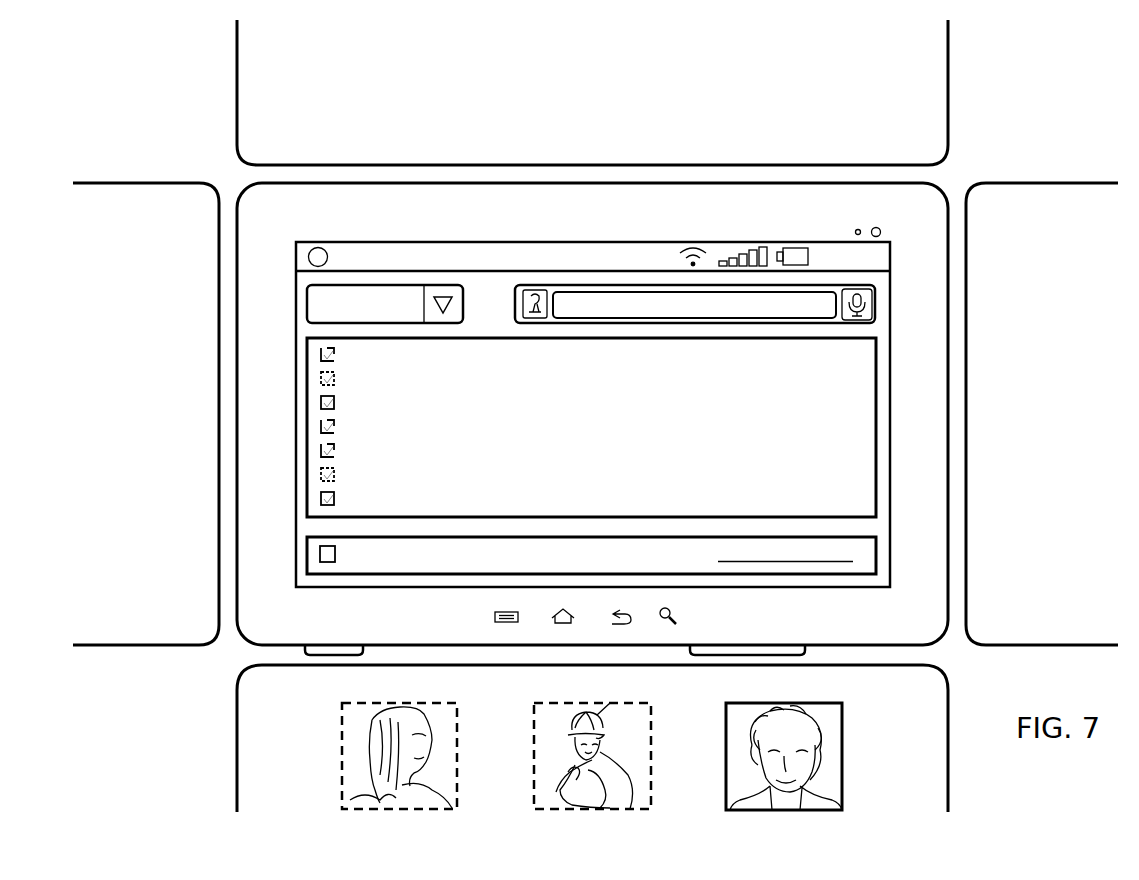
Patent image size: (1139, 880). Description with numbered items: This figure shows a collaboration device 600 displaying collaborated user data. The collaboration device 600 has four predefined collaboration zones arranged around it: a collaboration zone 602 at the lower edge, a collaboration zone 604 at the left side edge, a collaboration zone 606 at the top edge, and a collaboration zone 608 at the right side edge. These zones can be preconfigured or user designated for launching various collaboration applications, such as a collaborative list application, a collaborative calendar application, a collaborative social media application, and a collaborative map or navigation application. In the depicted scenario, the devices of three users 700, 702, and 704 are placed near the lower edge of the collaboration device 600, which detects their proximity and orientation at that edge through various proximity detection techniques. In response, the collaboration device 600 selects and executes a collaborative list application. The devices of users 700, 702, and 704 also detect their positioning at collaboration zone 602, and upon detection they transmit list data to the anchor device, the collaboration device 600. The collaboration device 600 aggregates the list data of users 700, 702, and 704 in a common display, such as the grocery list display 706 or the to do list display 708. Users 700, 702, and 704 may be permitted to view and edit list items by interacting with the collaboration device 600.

The collaboration device 600 is at (592, 419).
The collaboration zone 602 is at (237, 742).
The collaboration zone 604 is at (140, 183).
The collaboration zone 606 is at (237, 88).
The collaboration zone 608 is at (1047, 183).
The user 700 is at (342, 756).
The user 702 is at (534, 763).
The user 704 is at (842, 757).
The grocery list display 706 is at (591, 427).
The to do list display 708 is at (688, 537).